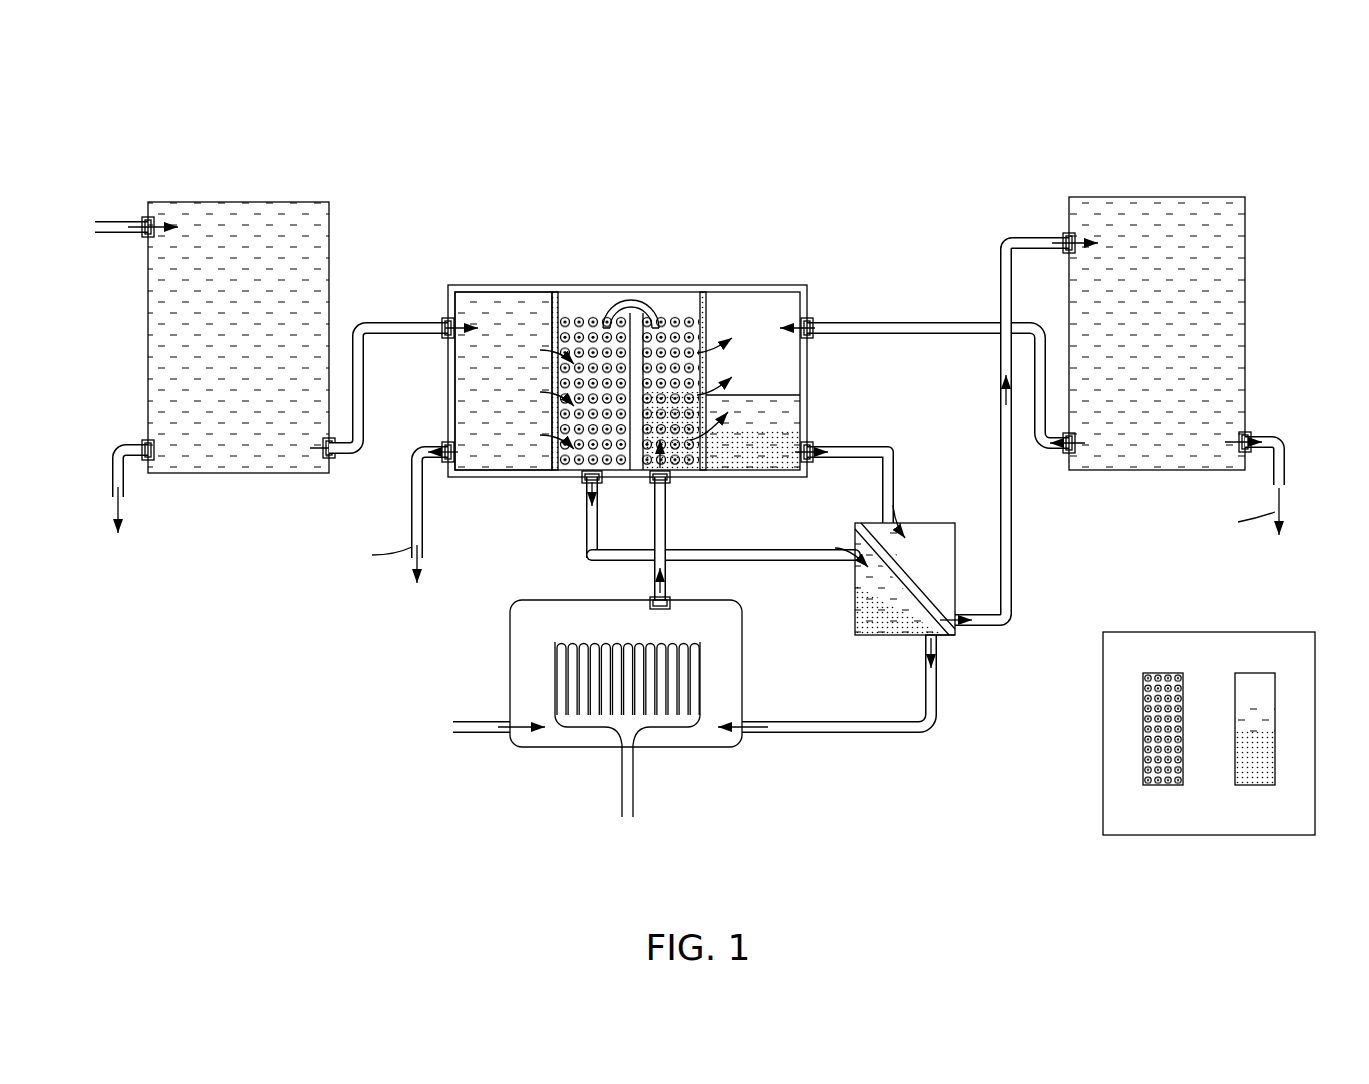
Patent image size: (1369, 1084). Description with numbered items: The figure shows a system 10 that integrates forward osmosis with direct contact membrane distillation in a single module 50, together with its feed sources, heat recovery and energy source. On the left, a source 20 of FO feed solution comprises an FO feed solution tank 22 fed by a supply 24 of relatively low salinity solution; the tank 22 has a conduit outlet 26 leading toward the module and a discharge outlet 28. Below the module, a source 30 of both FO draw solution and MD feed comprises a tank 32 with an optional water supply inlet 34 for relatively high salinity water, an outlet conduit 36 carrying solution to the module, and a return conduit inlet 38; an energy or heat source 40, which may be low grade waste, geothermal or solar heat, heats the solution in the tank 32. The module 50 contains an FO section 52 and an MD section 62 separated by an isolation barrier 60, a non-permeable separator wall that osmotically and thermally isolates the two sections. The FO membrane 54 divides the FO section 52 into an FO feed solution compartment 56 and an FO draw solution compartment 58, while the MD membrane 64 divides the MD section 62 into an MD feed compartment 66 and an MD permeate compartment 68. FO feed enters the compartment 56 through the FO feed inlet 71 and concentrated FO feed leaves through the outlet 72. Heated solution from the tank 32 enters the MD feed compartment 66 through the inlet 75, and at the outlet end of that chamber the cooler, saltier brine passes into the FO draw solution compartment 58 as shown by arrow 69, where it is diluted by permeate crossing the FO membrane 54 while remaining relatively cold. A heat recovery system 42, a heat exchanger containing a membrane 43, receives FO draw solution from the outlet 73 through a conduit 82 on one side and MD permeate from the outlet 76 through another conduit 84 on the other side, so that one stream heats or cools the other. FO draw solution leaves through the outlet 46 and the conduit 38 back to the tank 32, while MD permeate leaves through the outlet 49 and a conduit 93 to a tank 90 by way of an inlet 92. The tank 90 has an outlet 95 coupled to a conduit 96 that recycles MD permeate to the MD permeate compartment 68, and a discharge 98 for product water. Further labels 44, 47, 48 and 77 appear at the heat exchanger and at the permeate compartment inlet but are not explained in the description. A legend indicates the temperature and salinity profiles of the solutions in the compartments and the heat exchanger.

The system 10 is at (1232, 77).
The source of FO feed solution 20 is at (130, 333).
The FO feed solution tank 22 is at (238, 202).
The supply of FO feed solution 24 is at (128, 222).
The conduit outlet 26 is at (364, 360).
The discharge outlet 28 is at (112, 483).
The source of FO draw solution and MD feed 30 is at (588, 765).
The tank 32 is at (512, 641).
The water supply inlet 34 is at (488, 734).
The outlet conduit 36 is at (668, 518).
The return conduit inlet 38 is at (830, 721).
The energy or heat source 40 is at (636, 778).
The heat recovery system 42 is at (935, 641).
The membrane 43 is at (915, 587).
The heat exchanger 44 is at (855, 612).
The outlet 46 is at (920, 638).
The heat exchanger upper chamber 47 is at (945, 567).
The heat exchanger top inlet 48 is at (902, 520).
The outlet 49 is at (955, 612).
The integrated FO-MD module 50 is at (645, 282).
The FO section 52 is at (506, 487).
The FO membrane 54 is at (555, 325).
The FO feed solution compartment 56 is at (518, 317).
The FO draw solution compartment 58 is at (605, 348).
The isolation barrier 60 is at (632, 313).
The MD section 62 is at (758, 483).
The MD membrane 64 is at (705, 323).
The MD feed compartment 66 is at (673, 317).
The MD permeate compartment 68 is at (725, 320).
The arrow 69 is at (637, 305).
The FO feed inlet 71 is at (440, 320).
The outlet 72 is at (435, 445).
The outlet 73 is at (585, 490).
The inlet 75 is at (652, 488).
The outlet 76 is at (812, 442).
The permeate inlet port 77 is at (812, 336).
The conduit 82 is at (758, 563).
The conduit 84 is at (886, 450).
The tank 90 is at (1160, 197).
The inlet 92 is at (1060, 237).
The conduit 93 is at (1014, 540).
The outlet 95 is at (1060, 455).
The conduit 96 is at (907, 321).
The discharge 98 is at (1286, 460).